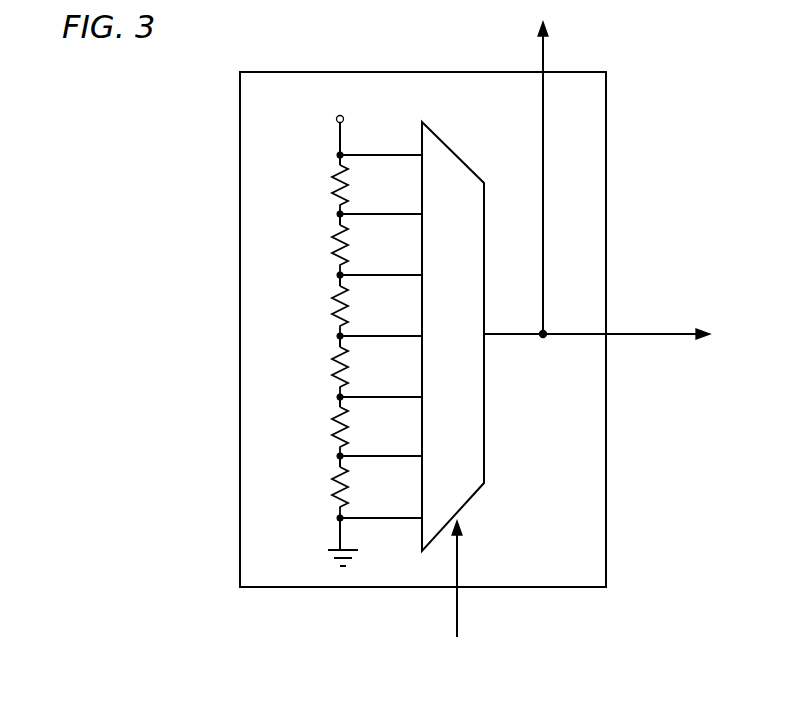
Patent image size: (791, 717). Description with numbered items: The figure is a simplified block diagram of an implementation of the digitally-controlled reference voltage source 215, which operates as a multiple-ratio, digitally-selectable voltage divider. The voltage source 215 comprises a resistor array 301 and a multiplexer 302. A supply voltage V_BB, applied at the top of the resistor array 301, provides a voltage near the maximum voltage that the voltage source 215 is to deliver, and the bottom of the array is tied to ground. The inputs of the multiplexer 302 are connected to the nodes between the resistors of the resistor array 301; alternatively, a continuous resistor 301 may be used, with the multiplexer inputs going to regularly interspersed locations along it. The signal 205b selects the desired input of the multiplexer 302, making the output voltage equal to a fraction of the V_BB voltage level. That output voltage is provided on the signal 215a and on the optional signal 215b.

The digitally-controlled reference voltage source 215 is at (606, 115).
The signal 215a is at (628, 334).
The optional signal 215b is at (543, 131).
The resistor array 301 is at (326, 165).
The multiplexer 302 is at (484, 408).
The signal 205b is at (457, 613).